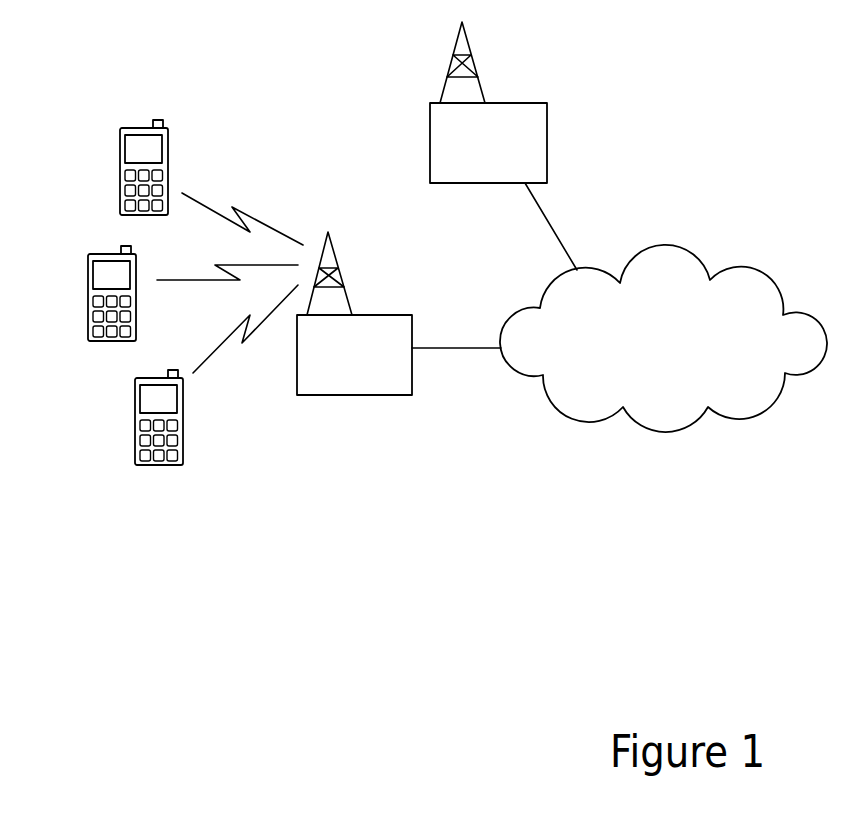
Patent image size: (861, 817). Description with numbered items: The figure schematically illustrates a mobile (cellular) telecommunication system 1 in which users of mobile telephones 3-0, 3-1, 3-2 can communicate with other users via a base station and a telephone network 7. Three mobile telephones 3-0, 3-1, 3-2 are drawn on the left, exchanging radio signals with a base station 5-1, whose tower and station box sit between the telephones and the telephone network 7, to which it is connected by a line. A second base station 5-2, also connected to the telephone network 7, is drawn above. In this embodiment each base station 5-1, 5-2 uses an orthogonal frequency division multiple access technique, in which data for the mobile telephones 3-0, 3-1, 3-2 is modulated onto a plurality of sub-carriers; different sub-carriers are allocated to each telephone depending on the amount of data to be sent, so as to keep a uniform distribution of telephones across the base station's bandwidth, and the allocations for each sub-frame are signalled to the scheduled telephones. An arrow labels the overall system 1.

The mobile telecommunication system 1 is at (593, 563).
The mobile telephone 3-0 is at (118, 207).
The mobile telephone 3-1 is at (88, 328).
The mobile telephone 3-2 is at (135, 447).
The base station 5-1 is at (397, 313).
The base station 5-2 is at (547, 110).
The telephone network 7 is at (693, 255).